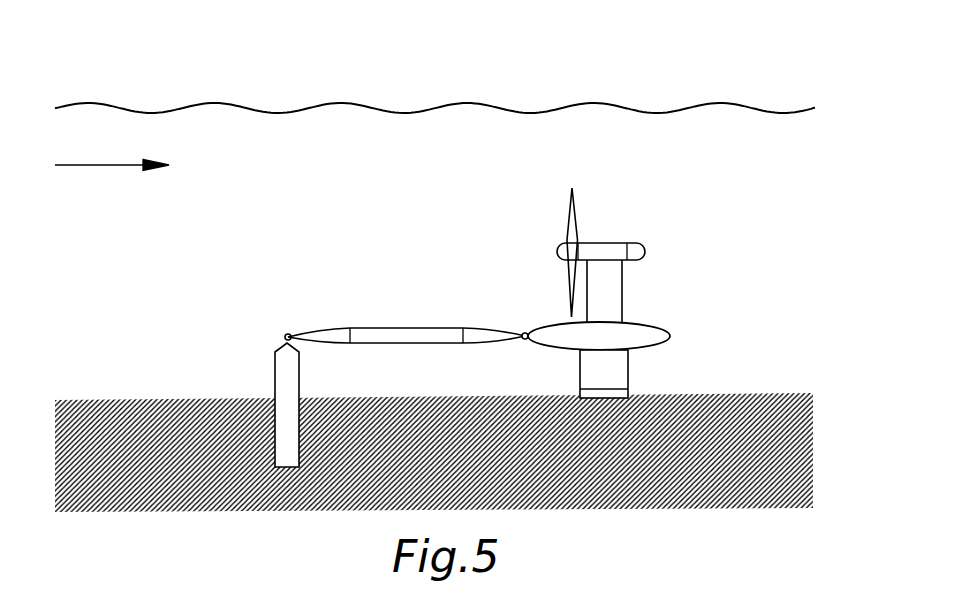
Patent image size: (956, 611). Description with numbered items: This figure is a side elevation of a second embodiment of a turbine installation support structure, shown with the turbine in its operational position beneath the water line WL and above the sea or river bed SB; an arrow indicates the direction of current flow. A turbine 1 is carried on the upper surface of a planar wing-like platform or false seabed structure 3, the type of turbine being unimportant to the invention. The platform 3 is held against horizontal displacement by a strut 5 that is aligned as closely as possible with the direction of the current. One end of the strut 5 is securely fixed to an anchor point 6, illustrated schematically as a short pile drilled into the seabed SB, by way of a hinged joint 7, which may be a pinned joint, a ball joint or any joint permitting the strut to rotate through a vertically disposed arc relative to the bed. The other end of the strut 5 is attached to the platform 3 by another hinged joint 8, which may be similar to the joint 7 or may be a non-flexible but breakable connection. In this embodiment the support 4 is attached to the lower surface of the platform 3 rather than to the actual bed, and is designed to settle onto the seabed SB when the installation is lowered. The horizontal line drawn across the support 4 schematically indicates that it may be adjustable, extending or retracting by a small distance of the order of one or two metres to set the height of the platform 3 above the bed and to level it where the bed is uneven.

The turbine 1 is at (567, 225).
The planar wing-like platform or false seabed structure 3 is at (651, 322).
The support 4 is at (612, 375).
The strut 5 is at (408, 327).
The anchor point 6 is at (287, 379).
The hinged joint 7 is at (288, 334).
The hinged joint 8 is at (522, 322).
The water line WL is at (120, 108).
The sea or river bed SB is at (121, 420).